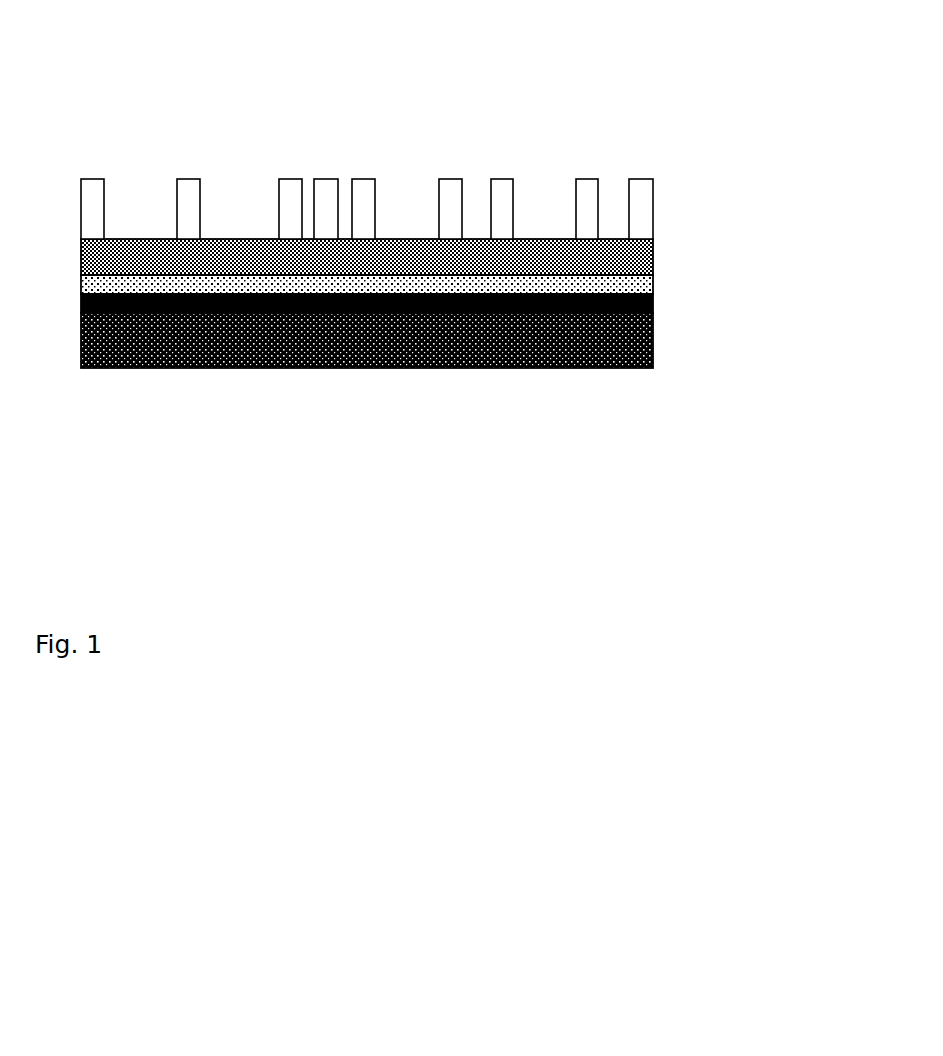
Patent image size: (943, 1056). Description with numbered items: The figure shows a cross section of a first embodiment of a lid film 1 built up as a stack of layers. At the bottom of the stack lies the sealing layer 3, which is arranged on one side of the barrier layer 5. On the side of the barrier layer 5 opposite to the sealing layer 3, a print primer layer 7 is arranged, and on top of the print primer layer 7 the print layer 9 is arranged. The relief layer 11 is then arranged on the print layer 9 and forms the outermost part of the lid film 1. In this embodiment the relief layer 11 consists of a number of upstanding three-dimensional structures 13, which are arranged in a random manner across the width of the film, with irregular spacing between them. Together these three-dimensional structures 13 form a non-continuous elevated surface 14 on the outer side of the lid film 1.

The lid film 1 is at (443, 78).
The sealing layer 3 is at (436, 354).
The barrier layer 5 is at (443, 329).
The print primer layer 7 is at (450, 296).
The print layer 9 is at (653, 254).
The relief layer 11 is at (662, 206).
The three-dimensional structures 13 is at (514, 194).
The non-continuous elevated surface 14 is at (453, 178).